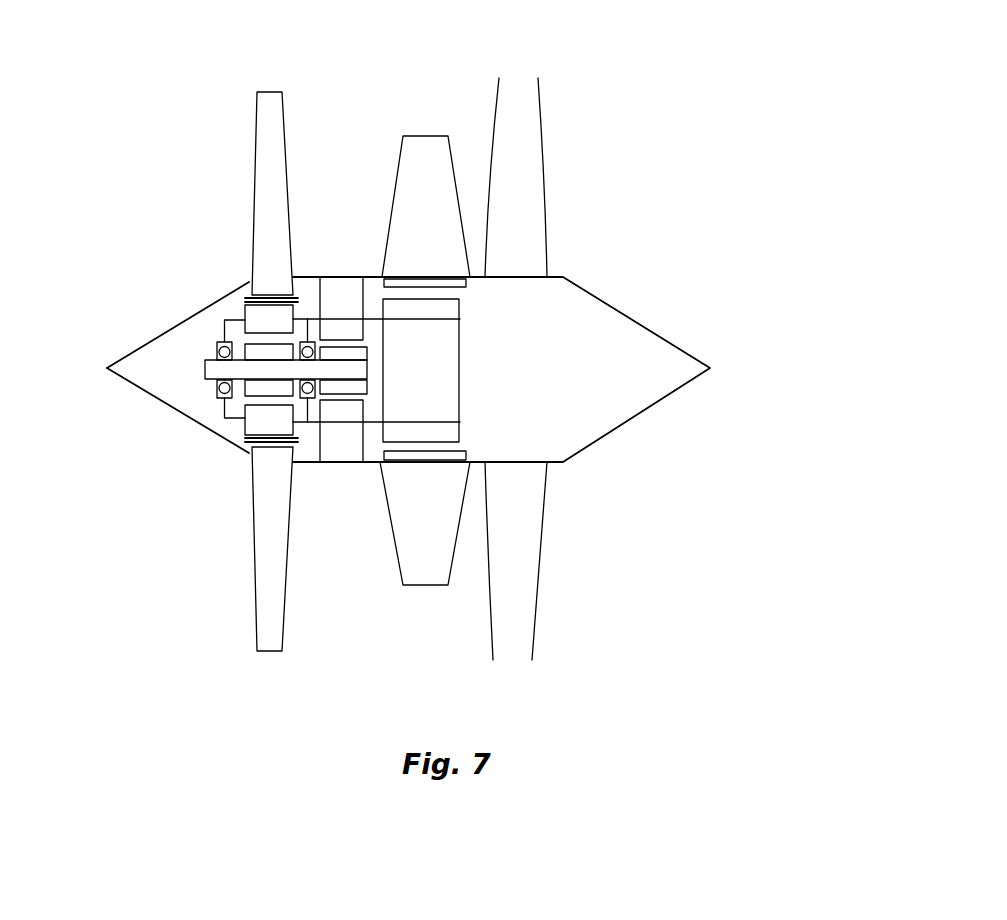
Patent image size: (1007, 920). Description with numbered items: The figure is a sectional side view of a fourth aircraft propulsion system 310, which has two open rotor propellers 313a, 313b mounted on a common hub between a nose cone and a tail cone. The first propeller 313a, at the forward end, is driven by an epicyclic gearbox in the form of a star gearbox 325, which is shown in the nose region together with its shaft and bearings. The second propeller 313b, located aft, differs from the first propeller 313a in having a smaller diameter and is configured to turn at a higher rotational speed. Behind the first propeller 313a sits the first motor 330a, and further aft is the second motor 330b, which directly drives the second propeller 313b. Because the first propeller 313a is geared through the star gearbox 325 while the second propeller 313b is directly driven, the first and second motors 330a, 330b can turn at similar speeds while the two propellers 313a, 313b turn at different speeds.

The propulsion system 310 is at (742, 215).
The first propeller 313a is at (250, 241).
The second propeller 313b is at (428, 135).
The star gearbox 325 is at (204, 333).
The first motor 330a is at (313, 370).
The second motor 330b is at (475, 408).